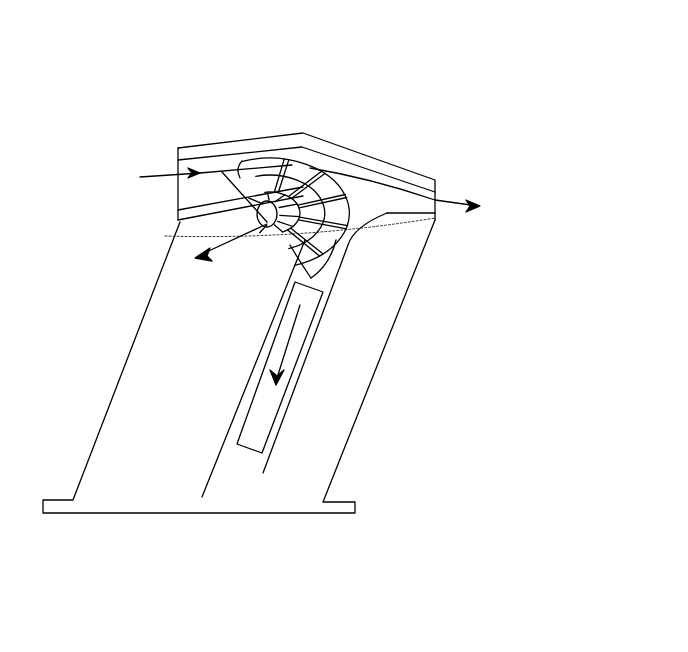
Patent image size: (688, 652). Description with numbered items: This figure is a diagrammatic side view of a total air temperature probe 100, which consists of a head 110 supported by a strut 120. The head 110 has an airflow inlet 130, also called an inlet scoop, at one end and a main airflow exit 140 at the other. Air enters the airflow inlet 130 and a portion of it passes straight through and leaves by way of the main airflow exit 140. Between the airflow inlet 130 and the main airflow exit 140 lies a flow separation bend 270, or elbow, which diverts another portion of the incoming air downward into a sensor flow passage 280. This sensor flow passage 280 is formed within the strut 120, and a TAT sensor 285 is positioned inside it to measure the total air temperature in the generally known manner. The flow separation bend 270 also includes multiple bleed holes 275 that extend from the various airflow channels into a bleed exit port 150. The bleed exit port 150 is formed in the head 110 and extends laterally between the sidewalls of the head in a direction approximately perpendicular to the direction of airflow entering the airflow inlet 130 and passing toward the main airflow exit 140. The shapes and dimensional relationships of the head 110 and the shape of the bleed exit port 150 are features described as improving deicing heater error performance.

The TAT probe 100 is at (488, 63).
The head 110 is at (245, 146).
The strut 120 is at (145, 383).
The airflow inlet 130 is at (177, 193).
The main airflow exit 140 is at (437, 185).
The bleed exit port 150 is at (266, 232).
The flow separation bend 270 is at (342, 174).
The bleed holes 275 is at (190, 220).
The sensor flow passage 280 is at (322, 320).
The TAT sensor 285 is at (268, 428).